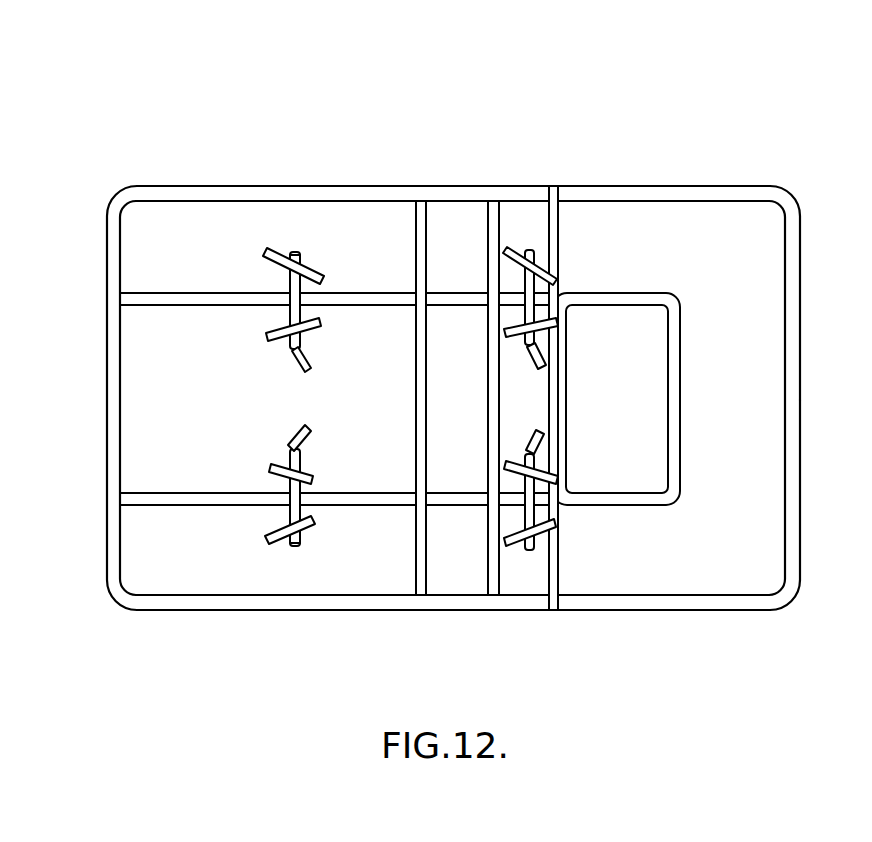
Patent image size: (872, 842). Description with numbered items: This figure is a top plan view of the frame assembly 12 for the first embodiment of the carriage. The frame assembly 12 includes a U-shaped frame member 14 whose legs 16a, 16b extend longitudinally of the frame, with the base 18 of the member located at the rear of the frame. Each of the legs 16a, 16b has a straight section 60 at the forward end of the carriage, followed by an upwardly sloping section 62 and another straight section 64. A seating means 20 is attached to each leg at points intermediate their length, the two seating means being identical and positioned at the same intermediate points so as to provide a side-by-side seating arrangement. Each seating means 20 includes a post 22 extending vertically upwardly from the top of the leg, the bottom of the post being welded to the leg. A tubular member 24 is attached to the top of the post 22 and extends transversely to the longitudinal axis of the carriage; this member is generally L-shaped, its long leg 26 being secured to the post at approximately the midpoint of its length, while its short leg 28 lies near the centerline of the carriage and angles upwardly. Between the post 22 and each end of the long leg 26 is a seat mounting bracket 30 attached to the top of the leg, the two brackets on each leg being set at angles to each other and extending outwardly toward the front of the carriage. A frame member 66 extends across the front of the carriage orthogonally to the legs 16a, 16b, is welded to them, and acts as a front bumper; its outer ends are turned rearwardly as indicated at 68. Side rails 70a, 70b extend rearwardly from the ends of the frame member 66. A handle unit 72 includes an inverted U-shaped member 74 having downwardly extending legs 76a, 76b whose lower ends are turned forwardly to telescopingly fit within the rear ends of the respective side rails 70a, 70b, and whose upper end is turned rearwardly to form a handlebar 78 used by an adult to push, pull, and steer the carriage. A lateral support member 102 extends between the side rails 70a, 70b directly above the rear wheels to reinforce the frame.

The frame assembly 12 is at (400, 78).
The U-shaped frame member 14 is at (698, 317).
The leg 16a is at (228, 262).
The leg 16b is at (217, 492).
The base 18 is at (680, 420).
The seating means 20 is at (293, 222).
The post 22 is at (277, 305).
The tubular member 24 is at (347, 270).
The long leg 26 is at (298, 253).
The short leg 28 is at (305, 371).
The seat mounting bracket 30 is at (268, 253).
The straight section 60 is at (200, 307).
The upwardly sloping section 62 is at (350, 305).
The straight section 64 is at (462, 292).
The frame member 66 is at (466, 401).
The turned outer ends 68 is at (141, 189).
The side rail 70a is at (379, 187).
The side rail 70b is at (368, 608).
The handle unit 72 is at (808, 307).
The inverted U-shaped member 74 is at (800, 412).
The leg 76a is at (712, 187).
The leg 76b is at (680, 612).
The handlebar 78 is at (785, 335).
The lateral support member 102 is at (551, 412).